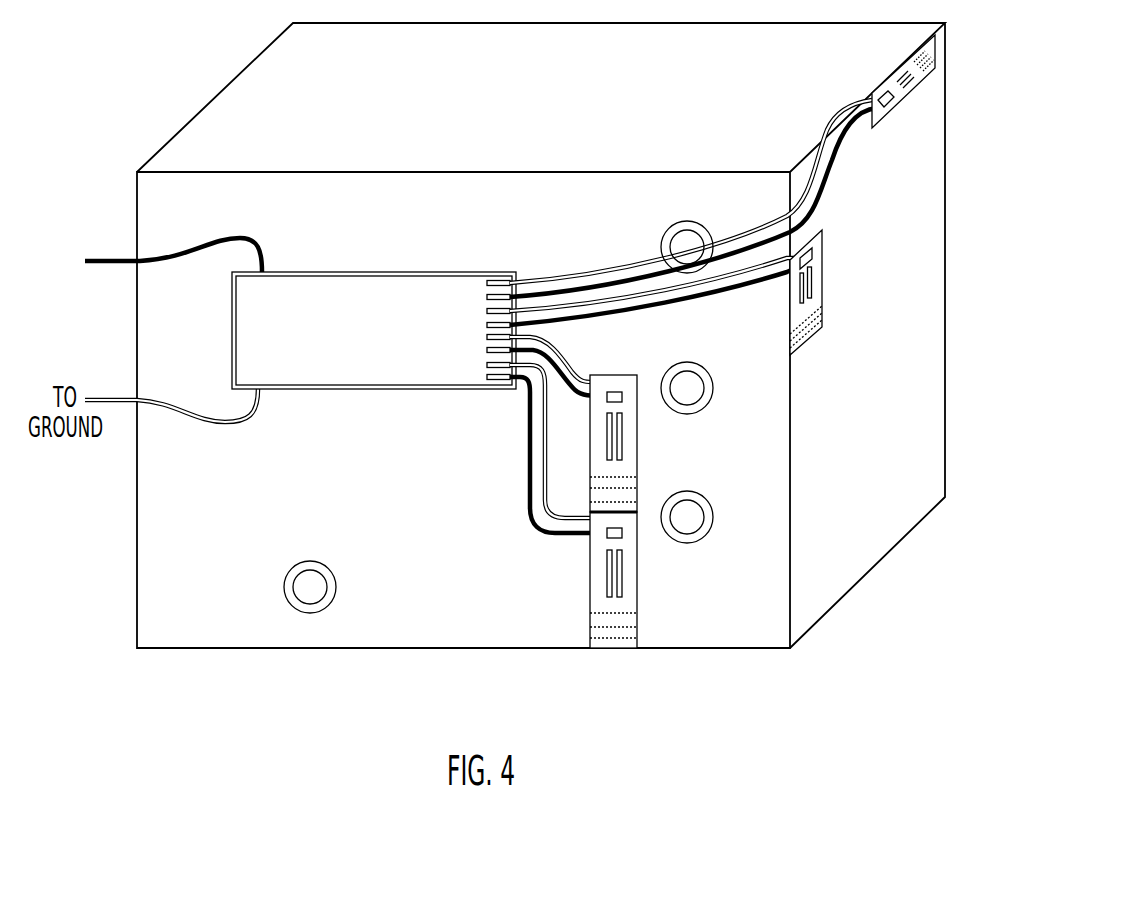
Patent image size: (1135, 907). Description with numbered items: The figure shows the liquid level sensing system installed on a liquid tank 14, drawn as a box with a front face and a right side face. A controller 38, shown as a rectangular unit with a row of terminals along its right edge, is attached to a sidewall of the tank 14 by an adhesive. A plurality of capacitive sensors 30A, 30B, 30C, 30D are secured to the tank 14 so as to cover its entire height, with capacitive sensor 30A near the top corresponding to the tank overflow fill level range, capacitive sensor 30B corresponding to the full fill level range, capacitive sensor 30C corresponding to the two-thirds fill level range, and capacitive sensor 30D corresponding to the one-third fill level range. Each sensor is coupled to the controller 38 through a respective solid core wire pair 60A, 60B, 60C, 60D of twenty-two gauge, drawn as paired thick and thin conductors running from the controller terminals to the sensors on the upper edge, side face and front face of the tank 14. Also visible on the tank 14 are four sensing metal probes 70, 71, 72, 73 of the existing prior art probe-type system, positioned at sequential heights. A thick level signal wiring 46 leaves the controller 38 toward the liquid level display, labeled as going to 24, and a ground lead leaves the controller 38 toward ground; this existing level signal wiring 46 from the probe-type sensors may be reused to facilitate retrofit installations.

The tank 14 is at (453, 598).
The power source 24 is at (65, 263).
The controller 38 is at (365, 271).
The level signal wiring 46 is at (110, 259).
The capacitive sensor 30A is at (902, 73).
The capacitive sensor 30B is at (817, 278).
The capacitive sensor 30C is at (628, 456).
The capacitive sensor 30D is at (628, 581).
The solid core wire pair 60A is at (858, 106).
The solid core wire pair 60B is at (760, 280).
The solid core wire pair 60C is at (558, 372).
The solid core wire pair 60D is at (551, 537).
The sensing metal probe 70 is at (311, 587).
The sensing metal probe 71 is at (688, 517).
The sensing metal probe 72 is at (688, 388).
The sensing metal probe 73 is at (687, 247).